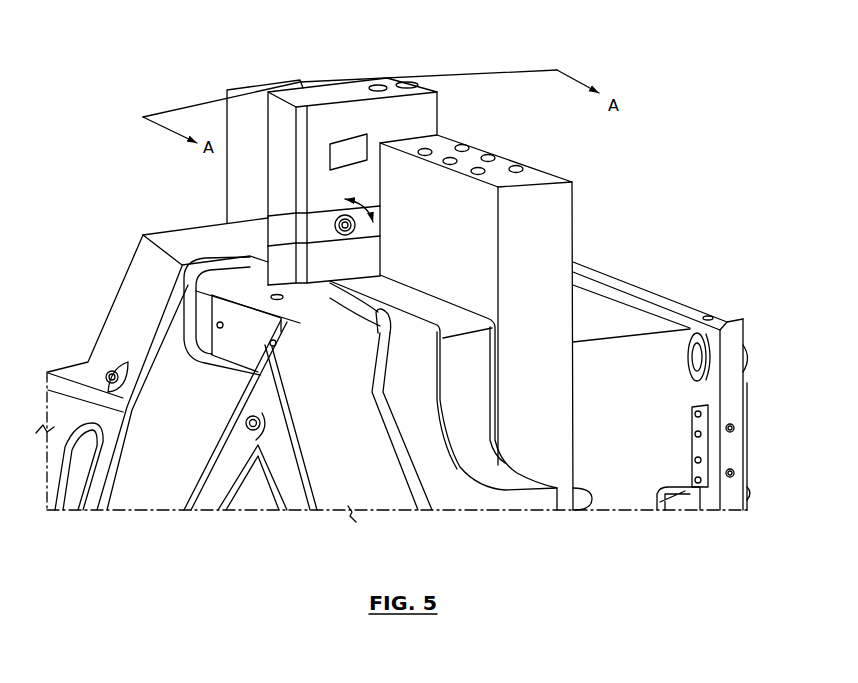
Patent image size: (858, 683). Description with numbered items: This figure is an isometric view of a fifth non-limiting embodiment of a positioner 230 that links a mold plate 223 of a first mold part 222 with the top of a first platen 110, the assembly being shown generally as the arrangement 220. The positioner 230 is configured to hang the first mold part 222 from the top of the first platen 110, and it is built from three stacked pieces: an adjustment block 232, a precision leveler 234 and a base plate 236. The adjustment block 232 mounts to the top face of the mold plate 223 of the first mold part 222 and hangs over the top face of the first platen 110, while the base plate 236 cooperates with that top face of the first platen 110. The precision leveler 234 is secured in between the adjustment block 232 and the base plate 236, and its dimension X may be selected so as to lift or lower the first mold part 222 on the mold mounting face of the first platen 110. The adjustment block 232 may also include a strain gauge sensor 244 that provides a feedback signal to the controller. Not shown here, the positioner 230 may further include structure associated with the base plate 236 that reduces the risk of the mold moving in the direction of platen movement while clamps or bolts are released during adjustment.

The first platen 110 is at (431, 442).
The molding system 220 is at (692, 160).
The first mold part 222 is at (594, 258).
The mold plate 223 is at (502, 167).
The positioner 230 is at (95, 143).
The adjustment block 232 is at (266, 117).
The precision leveler 234 is at (292, 225).
The base plate 236 is at (292, 265).
The strain gauge sensor 244 is at (352, 157).